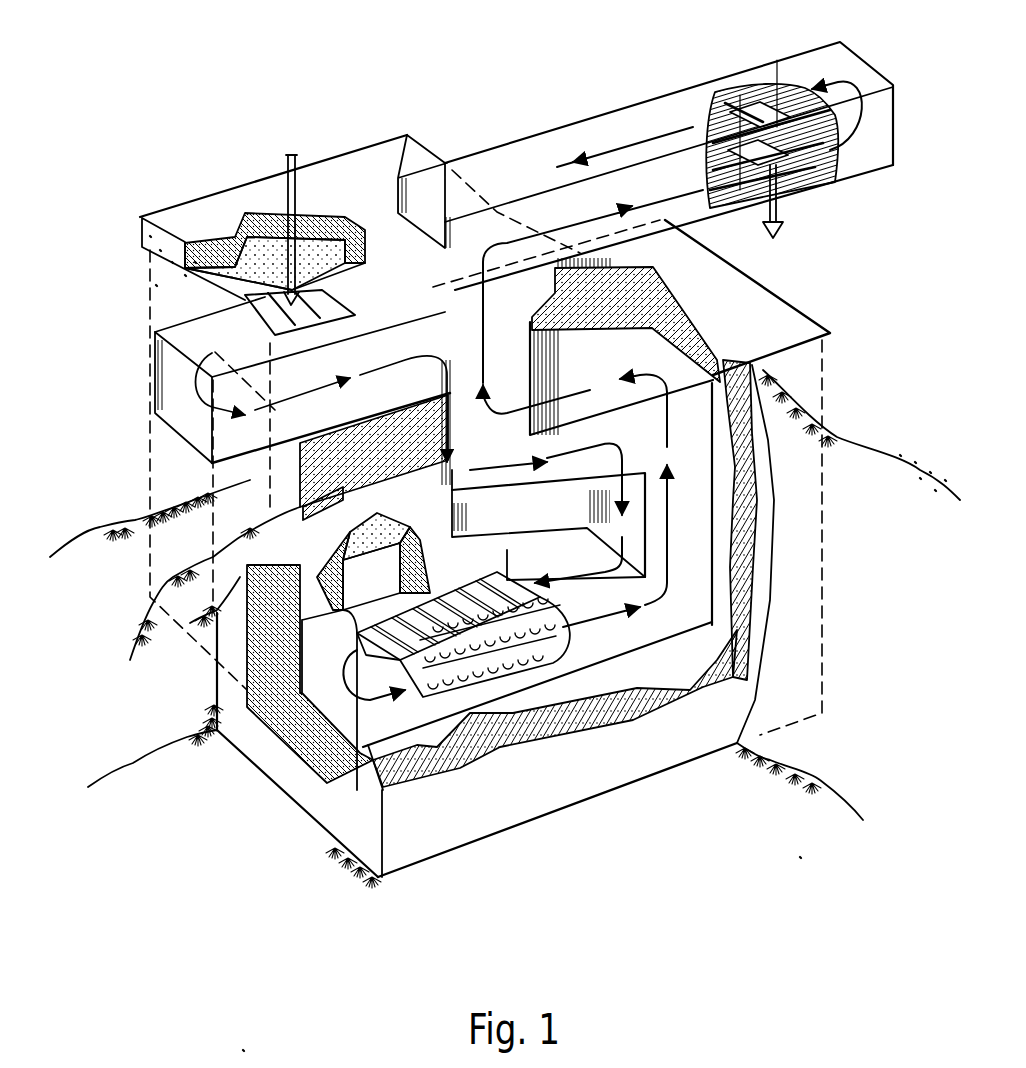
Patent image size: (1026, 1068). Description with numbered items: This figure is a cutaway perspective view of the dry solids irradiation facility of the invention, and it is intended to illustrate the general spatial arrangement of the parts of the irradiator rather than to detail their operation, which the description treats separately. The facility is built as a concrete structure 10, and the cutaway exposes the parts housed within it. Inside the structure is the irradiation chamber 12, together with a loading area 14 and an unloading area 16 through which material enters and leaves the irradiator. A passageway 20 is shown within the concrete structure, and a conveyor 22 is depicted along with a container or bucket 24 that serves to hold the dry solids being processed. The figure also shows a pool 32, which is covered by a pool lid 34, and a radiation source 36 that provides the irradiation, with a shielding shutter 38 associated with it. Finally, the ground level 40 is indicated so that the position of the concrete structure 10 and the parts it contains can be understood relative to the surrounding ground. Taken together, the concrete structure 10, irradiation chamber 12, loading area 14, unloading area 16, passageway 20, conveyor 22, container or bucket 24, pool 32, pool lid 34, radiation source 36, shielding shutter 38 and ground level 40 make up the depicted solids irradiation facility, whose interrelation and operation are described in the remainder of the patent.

The concrete structure 10 is at (760, 295).
The irradiation chamber 12 is at (507, 670).
The loading area 14 is at (245, 310).
The unloading area 16 is at (783, 183).
The passageway 20 is at (501, 460).
The conveyor 22 is at (783, 137).
The container or bucket 24 is at (740, 97).
The pool 32 is at (270, 230).
The pool lid 34 is at (357, 163).
The radiation source 36 is at (440, 697).
The shielding shutter 38 is at (393, 592).
The ground level 40 is at (853, 437).